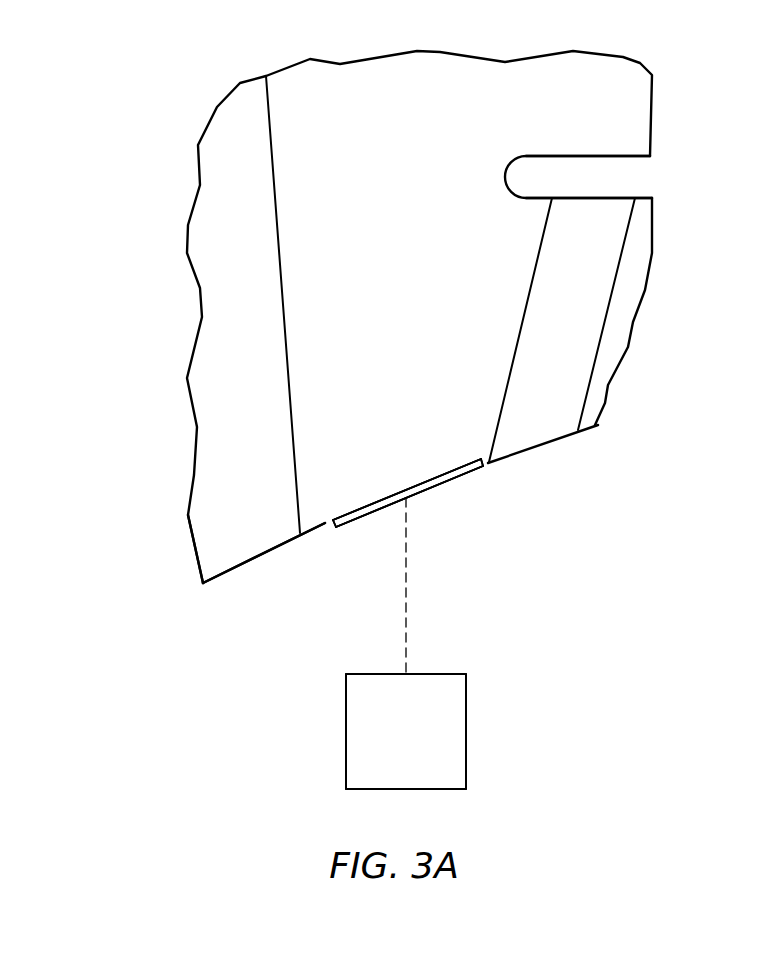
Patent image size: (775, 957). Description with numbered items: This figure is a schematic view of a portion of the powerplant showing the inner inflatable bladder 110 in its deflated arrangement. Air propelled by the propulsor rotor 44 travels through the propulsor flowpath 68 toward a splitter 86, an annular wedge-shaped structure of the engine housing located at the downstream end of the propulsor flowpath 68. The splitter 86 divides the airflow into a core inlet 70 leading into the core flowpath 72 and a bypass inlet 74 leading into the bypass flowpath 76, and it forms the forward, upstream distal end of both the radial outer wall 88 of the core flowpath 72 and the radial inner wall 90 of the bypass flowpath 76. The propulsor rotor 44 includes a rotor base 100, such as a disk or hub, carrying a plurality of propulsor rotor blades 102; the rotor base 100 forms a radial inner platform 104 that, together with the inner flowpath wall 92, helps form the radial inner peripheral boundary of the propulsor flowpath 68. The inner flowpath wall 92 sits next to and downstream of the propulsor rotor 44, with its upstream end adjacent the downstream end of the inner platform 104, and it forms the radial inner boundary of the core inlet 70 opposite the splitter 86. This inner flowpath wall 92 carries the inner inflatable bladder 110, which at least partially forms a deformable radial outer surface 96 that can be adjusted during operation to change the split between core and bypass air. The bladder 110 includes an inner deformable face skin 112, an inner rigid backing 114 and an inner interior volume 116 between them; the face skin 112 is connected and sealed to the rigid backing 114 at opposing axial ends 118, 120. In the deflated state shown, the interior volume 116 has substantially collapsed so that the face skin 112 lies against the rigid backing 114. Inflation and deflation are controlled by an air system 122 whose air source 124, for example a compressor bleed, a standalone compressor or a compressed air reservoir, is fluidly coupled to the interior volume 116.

The propulsor rotor 44 is at (185, 592).
The propulsor flowpath 68 is at (333, 231).
The core inlet 70 is at (463, 307).
The core flowpath 72 is at (618, 314).
The bypass inlet 74 is at (487, 106).
The bypass flowpath 76 is at (638, 113).
The splitter 86 is at (505, 177).
The radial outer wall of the core flowpath 88 is at (615, 199).
The radial inner wall of the bypass flowpath 90 is at (622, 152).
The inner flowpath wall 92 is at (401, 458).
The deformable radial outer surface 96 is at (445, 473).
The rotor base 100 is at (203, 553).
The propulsor rotor blades 102 is at (218, 390).
The radial inner platform 104 is at (230, 568).
The inner inflatable bladder 110 is at (425, 472).
The inner deformable face skin 112 is at (377, 500).
The inner rigid backing 114 is at (377, 510).
The inner interior volume 116 is at (460, 476).
The first axial end of the inner inflatable bladder 118 is at (333, 525).
The second axial end of the inner inflatable bladder 120 is at (488, 465).
The air system 122 is at (327, 780).
The air source 124 is at (388, 743).